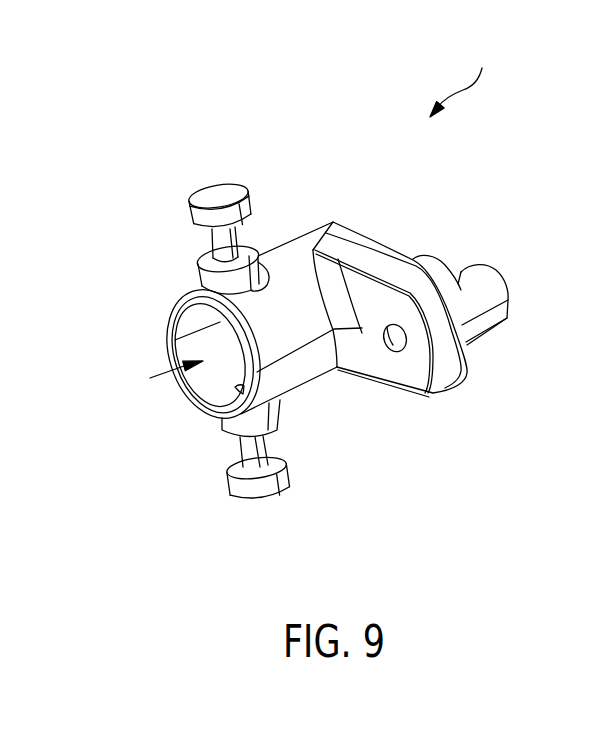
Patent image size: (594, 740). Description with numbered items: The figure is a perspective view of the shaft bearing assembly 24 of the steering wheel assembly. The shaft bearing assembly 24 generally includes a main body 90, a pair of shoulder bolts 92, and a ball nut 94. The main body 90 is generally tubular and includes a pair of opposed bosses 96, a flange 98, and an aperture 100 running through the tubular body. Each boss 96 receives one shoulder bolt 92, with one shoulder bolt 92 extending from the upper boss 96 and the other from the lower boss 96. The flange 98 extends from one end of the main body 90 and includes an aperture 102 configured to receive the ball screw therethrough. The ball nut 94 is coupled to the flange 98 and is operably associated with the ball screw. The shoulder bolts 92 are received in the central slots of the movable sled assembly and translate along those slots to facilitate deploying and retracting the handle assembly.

The shaft bearing assembly 24 is at (462, 80).
The main body 90 is at (285, 257).
The shoulder bolts 92 is at (237, 180).
The ball nut 94 is at (468, 276).
The bosses 96 is at (197, 260).
The flange 98 is at (417, 386).
The aperture 100 is at (162, 375).
The aperture 102 is at (391, 351).